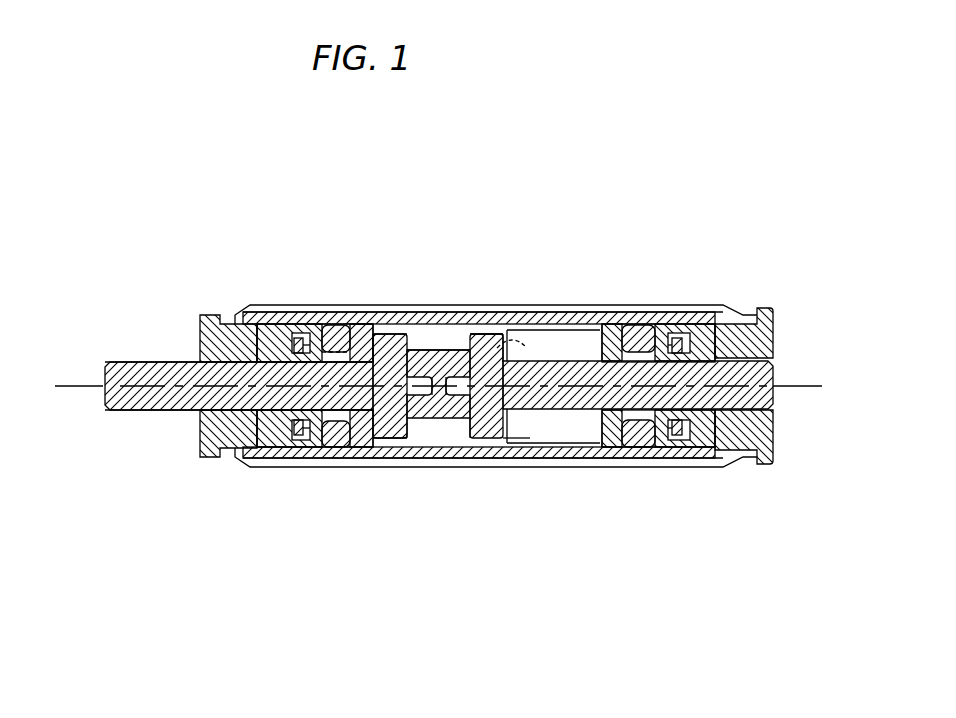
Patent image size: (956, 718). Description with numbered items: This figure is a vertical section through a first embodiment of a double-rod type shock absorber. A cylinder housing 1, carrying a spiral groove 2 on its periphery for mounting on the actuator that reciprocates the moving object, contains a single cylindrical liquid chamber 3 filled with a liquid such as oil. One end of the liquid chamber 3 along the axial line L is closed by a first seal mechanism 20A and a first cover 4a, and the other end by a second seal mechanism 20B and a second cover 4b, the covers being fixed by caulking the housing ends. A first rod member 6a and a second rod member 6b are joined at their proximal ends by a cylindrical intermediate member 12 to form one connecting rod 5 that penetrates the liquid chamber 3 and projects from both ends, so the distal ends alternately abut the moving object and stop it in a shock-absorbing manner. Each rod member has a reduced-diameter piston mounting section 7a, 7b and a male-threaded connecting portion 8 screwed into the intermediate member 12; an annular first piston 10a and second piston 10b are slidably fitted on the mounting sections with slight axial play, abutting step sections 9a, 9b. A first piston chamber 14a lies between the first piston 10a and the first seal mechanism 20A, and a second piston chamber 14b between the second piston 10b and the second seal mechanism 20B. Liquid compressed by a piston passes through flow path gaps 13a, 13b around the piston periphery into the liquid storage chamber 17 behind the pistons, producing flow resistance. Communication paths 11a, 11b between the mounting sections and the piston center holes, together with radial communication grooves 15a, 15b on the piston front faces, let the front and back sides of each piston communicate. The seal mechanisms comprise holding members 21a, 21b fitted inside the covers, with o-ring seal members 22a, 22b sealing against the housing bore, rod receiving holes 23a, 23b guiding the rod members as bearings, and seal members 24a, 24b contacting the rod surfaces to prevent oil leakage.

The cylinder housing 1 is at (652, 305).
The spiral groove 2 is at (472, 332).
The liquid chamber 3 is at (562, 432).
The first cover 4a is at (216, 325).
The second cover 4b is at (771, 308).
The connecting rod 5 is at (188, 420).
The first rod member 6a is at (162, 367).
The second rod member 6b is at (773, 372).
The piston mounting section 7a is at (413, 450).
The piston mounting section 7b is at (513, 450).
The connecting portion 8 is at (440, 350).
The step section 9a is at (387, 450).
The step section 9b is at (543, 450).
The first piston 10a is at (403, 345).
The second piston 10b is at (497, 345).
The communication path 11a is at (388, 340).
The communication path 11b is at (520, 340).
The intermediate member 12 is at (453, 422).
The flow path gap 13a is at (397, 450).
The flow path gap 13b is at (487, 450).
The first piston chamber 14a is at (367, 345).
The second piston chamber 14b is at (578, 345).
The communication groove 15a is at (330, 335).
The communication groove 15b is at (548, 332).
The liquid storage chamber 17 is at (458, 342).
The first seal mechanism 20A is at (260, 320).
The second seal mechanism 20B is at (678, 306).
The holding member 21a is at (293, 325).
The holding member 21b is at (613, 325).
The seal member 22a is at (340, 450).
The seal member 22b is at (635, 450).
The rod receiving hole 23a is at (293, 450).
The rod receiving hole 23b is at (677, 450).
The seal member 24a is at (268, 452).
The seal member 24b is at (700, 450).
The axial line L is at (425, 386).